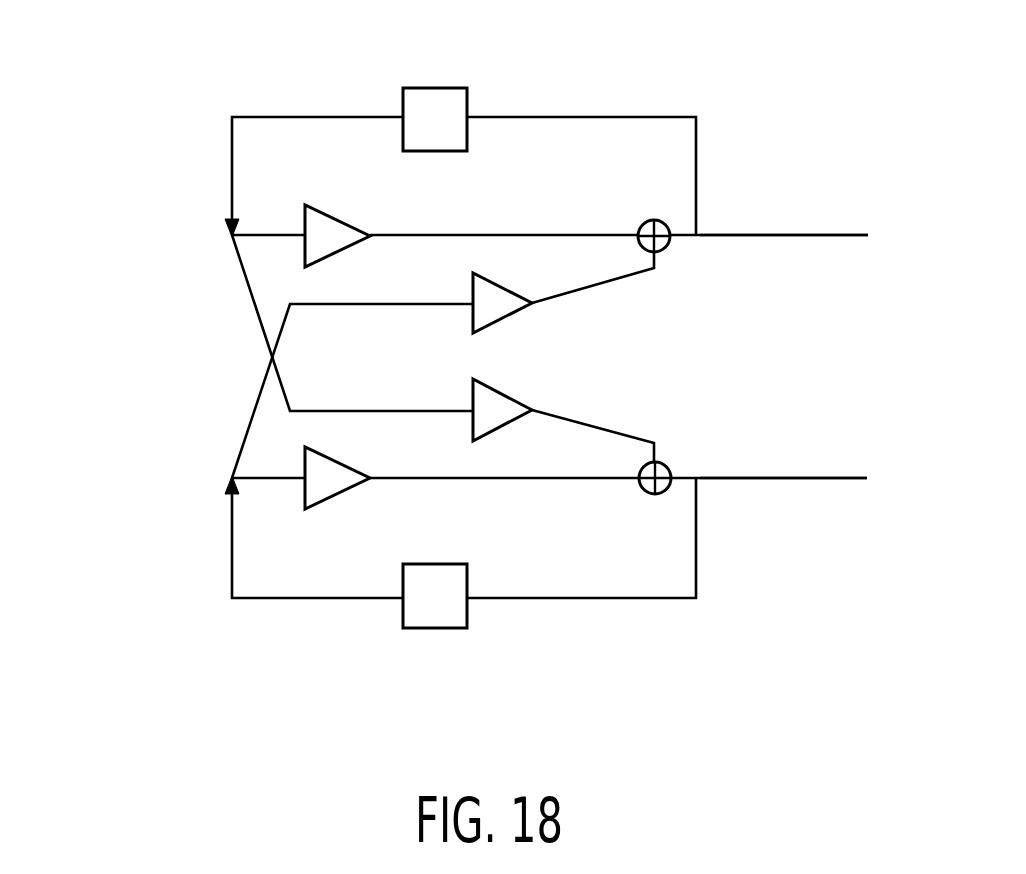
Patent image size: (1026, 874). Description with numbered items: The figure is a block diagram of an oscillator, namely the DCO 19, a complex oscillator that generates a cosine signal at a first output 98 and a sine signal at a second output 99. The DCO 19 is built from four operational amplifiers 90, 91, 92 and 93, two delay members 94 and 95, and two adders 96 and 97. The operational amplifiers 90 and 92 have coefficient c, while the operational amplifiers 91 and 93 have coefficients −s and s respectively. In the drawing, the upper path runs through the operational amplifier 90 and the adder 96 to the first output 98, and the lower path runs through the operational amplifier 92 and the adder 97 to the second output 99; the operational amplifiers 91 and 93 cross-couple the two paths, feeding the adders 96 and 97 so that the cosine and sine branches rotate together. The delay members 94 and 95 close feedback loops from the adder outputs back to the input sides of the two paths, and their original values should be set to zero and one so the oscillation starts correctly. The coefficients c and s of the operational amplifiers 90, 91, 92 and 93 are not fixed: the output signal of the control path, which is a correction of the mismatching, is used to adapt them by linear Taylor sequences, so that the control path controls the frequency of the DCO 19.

The DCO 19 is at (118, 200).
The operational amplifier 90 is at (338, 218).
The operational amplifier 91 is at (482, 284).
The operational amplifier 92 is at (340, 497).
The operational amplifier 93 is at (482, 432).
The delay member 94 is at (450, 88).
The delay member 95 is at (450, 630).
The adder 96 is at (660, 219).
The adder 97 is at (663, 496).
The first output 98 is at (880, 240).
The second output 99 is at (880, 468).